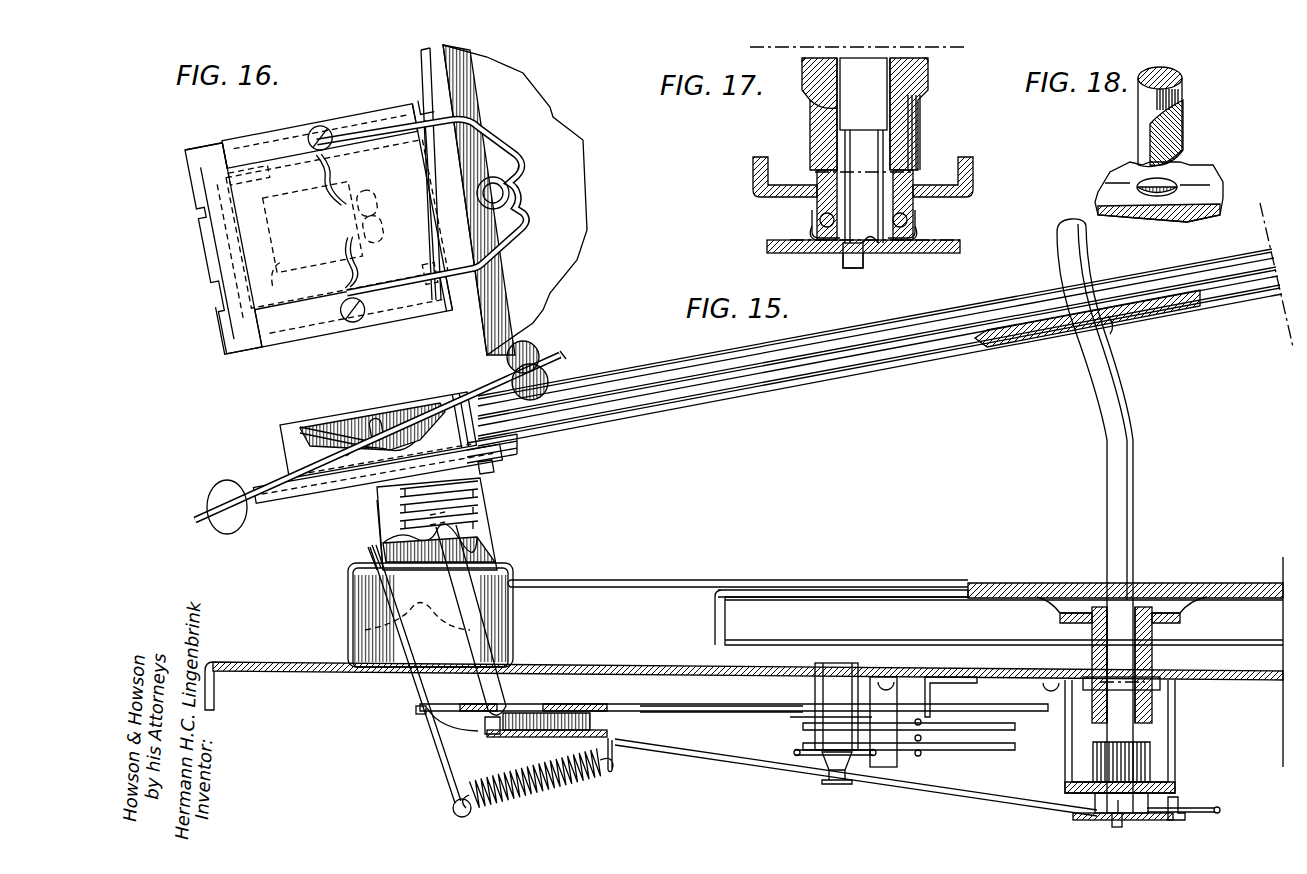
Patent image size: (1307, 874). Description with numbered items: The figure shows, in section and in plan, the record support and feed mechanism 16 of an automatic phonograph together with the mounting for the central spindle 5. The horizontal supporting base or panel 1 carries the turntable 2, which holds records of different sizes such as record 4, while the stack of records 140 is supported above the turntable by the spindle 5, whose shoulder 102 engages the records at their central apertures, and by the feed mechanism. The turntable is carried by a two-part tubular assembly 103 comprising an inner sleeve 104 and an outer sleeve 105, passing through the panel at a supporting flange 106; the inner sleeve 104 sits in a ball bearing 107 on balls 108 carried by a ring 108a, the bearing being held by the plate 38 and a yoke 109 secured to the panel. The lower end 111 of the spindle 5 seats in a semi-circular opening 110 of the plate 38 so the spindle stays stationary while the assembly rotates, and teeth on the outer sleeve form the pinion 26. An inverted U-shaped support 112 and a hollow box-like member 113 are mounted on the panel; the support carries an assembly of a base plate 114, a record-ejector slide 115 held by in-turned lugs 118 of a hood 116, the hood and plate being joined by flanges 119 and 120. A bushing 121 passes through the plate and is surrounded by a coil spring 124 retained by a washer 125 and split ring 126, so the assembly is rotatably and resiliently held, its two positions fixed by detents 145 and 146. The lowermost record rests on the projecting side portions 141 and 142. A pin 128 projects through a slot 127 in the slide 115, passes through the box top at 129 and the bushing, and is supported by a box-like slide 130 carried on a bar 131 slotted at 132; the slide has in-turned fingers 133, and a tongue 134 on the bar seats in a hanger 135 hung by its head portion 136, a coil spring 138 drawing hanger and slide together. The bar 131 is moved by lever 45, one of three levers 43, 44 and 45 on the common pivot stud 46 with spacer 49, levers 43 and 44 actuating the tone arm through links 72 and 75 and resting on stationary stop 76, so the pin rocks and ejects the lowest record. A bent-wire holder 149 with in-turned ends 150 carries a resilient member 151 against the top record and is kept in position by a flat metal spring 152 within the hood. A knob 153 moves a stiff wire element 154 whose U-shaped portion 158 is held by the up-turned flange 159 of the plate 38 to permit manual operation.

In FIG. 18, the supporting base or panel 1 is at (1120, 172).
In FIG. 15, the supporting base or panel 1 is at (622, 665).
In FIG. 15, the turntable 2 is at (716, 620).
In FIG. 15, the record 4 is at (640, 580).
In FIG. 17, the central spindle 5 is at (868, 88).
In FIG. 18, the central spindle 5 is at (1183, 85).
In FIG. 15, the central spindle 5 is at (1135, 455).
In FIG. 16, the record support and feed mechanism 16 is at (305, 241).
In FIG. 15, the record support and feed mechanism 16 is at (300, 430).
In FIG. 17, the pinion 26 is at (915, 118).
In FIG. 15, the pinion 26 is at (1150, 765).
In FIG. 17, the plate 38 is at (767, 247).
In FIG. 15, the plate 38 is at (1073, 818).
In FIG. 15, the lever 43 is at (1003, 750).
In FIG. 15, the lever 44 is at (1015, 728).
In FIG. 15, the lever 45 is at (1007, 707).
In FIG. 15, the common pivot stud 46 is at (835, 785).
In FIG. 15, the spacer 49 is at (815, 690).
In FIG. 15, the link 72 is at (920, 756).
In FIG. 15, the link element 75 is at (923, 722).
In FIG. 15, the stationary stop 76 is at (885, 767).
In FIG. 15, the shoulder 102 is at (1113, 323).
In FIG. 17, the two-part tubular assembly 103 is at (928, 68).
In FIG. 15, the two-part tubular assembly 103 is at (1160, 630).
In FIG. 17, the inner sleeve 104 is at (900, 138).
In FIG. 15, the inner sleeve 104 is at (1150, 618).
In FIG. 17, the outer sleeve 105 is at (808, 92).
In FIG. 15, the outer sleeve 105 is at (1075, 628).
In FIG. 15, the supporting flange 106 is at (1165, 690).
In FIG. 17, the ball bearing 107 is at (912, 215).
In FIG. 15, the ball bearing 107 is at (1150, 810).
In FIG. 17, the balls 108 is at (818, 220).
In FIG. 17, the ring 108a is at (905, 235).
In FIG. 17, the yoke 109 is at (755, 160).
In FIG. 15, the yoke 109 is at (1175, 735).
In FIG. 17, the semi-circular opening 110 is at (843, 262).
In FIG. 18, the semi-circular opening 110 is at (1185, 165).
In FIG. 15, the semi-circular opening 110 is at (1112, 825).
In FIG. 17, the shaped lower end of spindle 111 is at (865, 262).
In FIG. 18, the shaped lower end of spindle 111 is at (1180, 130).
In FIG. 15, the shaped lower end of spindle 111 is at (1124, 825).
In FIG. 15, the inverted U-shaped support 112 is at (490, 520).
In FIG. 15, the hollow box-like member 113 is at (348, 580).
In FIG. 16, the base plate 114 is at (207, 147).
In FIG. 15, the base plate 114 is at (520, 460).
In FIG. 16, the slide 115 is at (215, 308).
In FIG. 15, the slide 115 is at (520, 443).
In FIG. 16, the hood 116 is at (215, 238).
In FIG. 15, the hood 116 is at (458, 397).
In FIG. 16, the in-turned lugs 118 is at (240, 176).
In FIG. 15, the in-turned lugs 118 is at (473, 440).
In FIG. 16, the flange 119 is at (352, 115).
In FIG. 16, the flange 120 is at (388, 322).
In FIG. 15, the flange 120 is at (345, 500).
In FIG. 15, the bushing or sleeve 121 is at (430, 520).
In FIG. 15, the coil spring 124 is at (480, 493).
In FIG. 15, the washer 125 is at (482, 505).
In FIG. 15, the split ring 126 is at (480, 537).
In FIG. 16, the slot 127 is at (372, 197).
In FIG. 16, the pin 128 is at (372, 229).
In FIG. 15, the pin 128 is at (462, 600).
In FIG. 15, the pivot point in box top 129 is at (492, 555).
In FIG. 15, the box-like slide 130 is at (585, 703).
In FIG. 15, the bar 131 is at (735, 706).
In FIG. 15, the slot 132 is at (545, 727).
In FIG. 15, the in-turned fingers 133 is at (487, 733).
In FIG. 15, the tongue 134 is at (416, 712).
In FIG. 15, the hanger 135 is at (410, 683).
In FIG. 15, the head portion 136 is at (368, 548).
In FIG. 15, the coil spring 138 is at (523, 796).
In FIG. 16, the stack of records 140 is at (548, 130).
In FIG. 15, the stack of records 140 is at (745, 395).
In FIG. 16, the projecting side portion 141 is at (450, 110).
In FIG. 16, the projecting side portion 142 is at (485, 292).
In FIG. 15, the projecting side portion 142 is at (520, 450).
In FIG. 15, the detent 145 is at (377, 502).
In FIG. 15, the detent 146 is at (494, 470).
In FIG. 16, the holder 149 is at (520, 233).
In FIG. 15, the holder 149 is at (560, 357).
In FIG. 16, the in-turned ends 150 is at (345, 185).
In FIG. 15, the in-turned ends 150 is at (398, 425).
In FIG. 16, the resilient member 151 is at (512, 193).
In FIG. 15, the resilient member 151 is at (548, 380).
In FIG. 16, the flat metal spring 152 is at (273, 279).
In FIG. 15, the flat metal spring 152 is at (340, 425).
In FIG. 15, the manually-operable knob 153 is at (360, 645).
In FIG. 15, the element 154 is at (730, 765).
In FIG. 15, the U-shaped portion 158 is at (1222, 812).
In FIG. 15, the up-turned flange 159 is at (1185, 800).